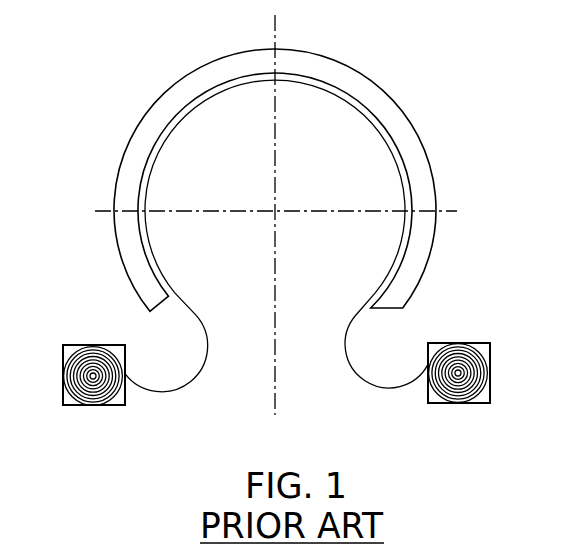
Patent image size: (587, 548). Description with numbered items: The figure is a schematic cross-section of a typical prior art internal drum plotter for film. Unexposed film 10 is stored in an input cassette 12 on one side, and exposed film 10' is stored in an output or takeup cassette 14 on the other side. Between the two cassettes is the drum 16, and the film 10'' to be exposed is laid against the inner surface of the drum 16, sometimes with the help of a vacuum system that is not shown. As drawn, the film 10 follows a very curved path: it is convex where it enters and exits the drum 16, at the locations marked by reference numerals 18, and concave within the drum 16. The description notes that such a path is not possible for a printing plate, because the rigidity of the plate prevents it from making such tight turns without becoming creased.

The drum 16 is at (330, 72).
The film to be exposed 10'' is at (275, 186).
The convex path portions 18 is at (197, 377).
The input cassette 12 is at (63, 345).
The unexposed film 10 is at (76, 396).
The output or takeup cassette 14 is at (490, 342).
The exposed film 10' is at (482, 393).